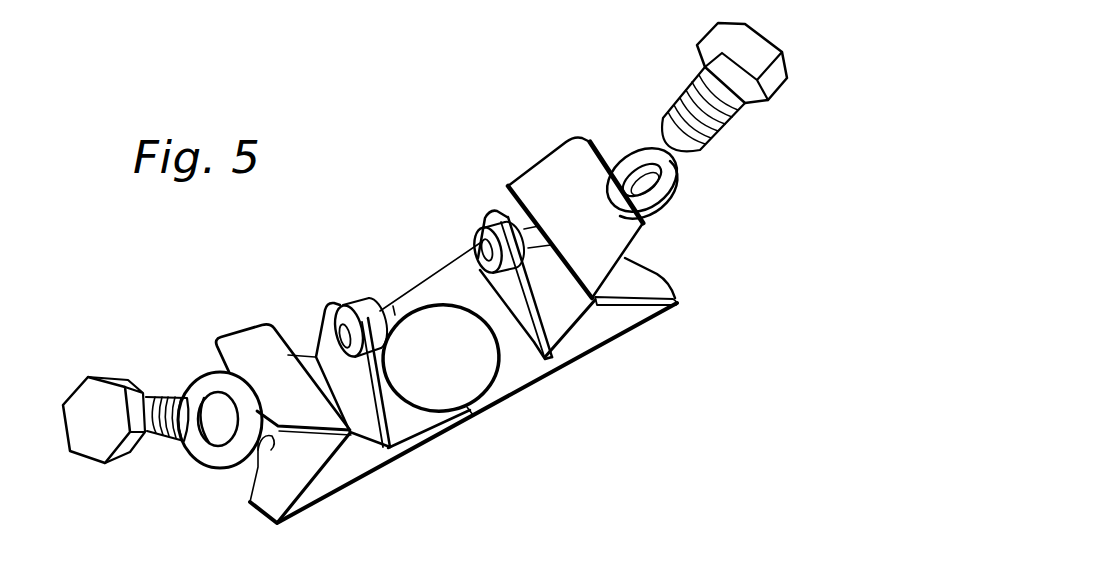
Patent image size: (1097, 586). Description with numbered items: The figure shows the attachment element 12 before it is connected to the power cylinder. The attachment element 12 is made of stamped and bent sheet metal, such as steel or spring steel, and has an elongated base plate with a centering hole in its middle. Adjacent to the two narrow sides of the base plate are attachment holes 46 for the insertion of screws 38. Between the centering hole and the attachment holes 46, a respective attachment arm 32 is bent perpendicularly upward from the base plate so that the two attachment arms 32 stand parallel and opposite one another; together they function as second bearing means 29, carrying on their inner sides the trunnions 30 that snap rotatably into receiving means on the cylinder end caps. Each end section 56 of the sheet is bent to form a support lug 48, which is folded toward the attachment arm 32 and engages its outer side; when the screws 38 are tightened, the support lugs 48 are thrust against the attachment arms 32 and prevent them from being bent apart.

The attachment element 12 is at (467, 198).
The second bearing means 29 is at (427, 289).
The trunnions 30 is at (478, 235).
The attachment arms 32 is at (387, 432).
The screws 38 is at (167, 447).
The attachment holes 46 is at (259, 460).
The support lug 48 is at (257, 342).
The end section 56 is at (308, 466).